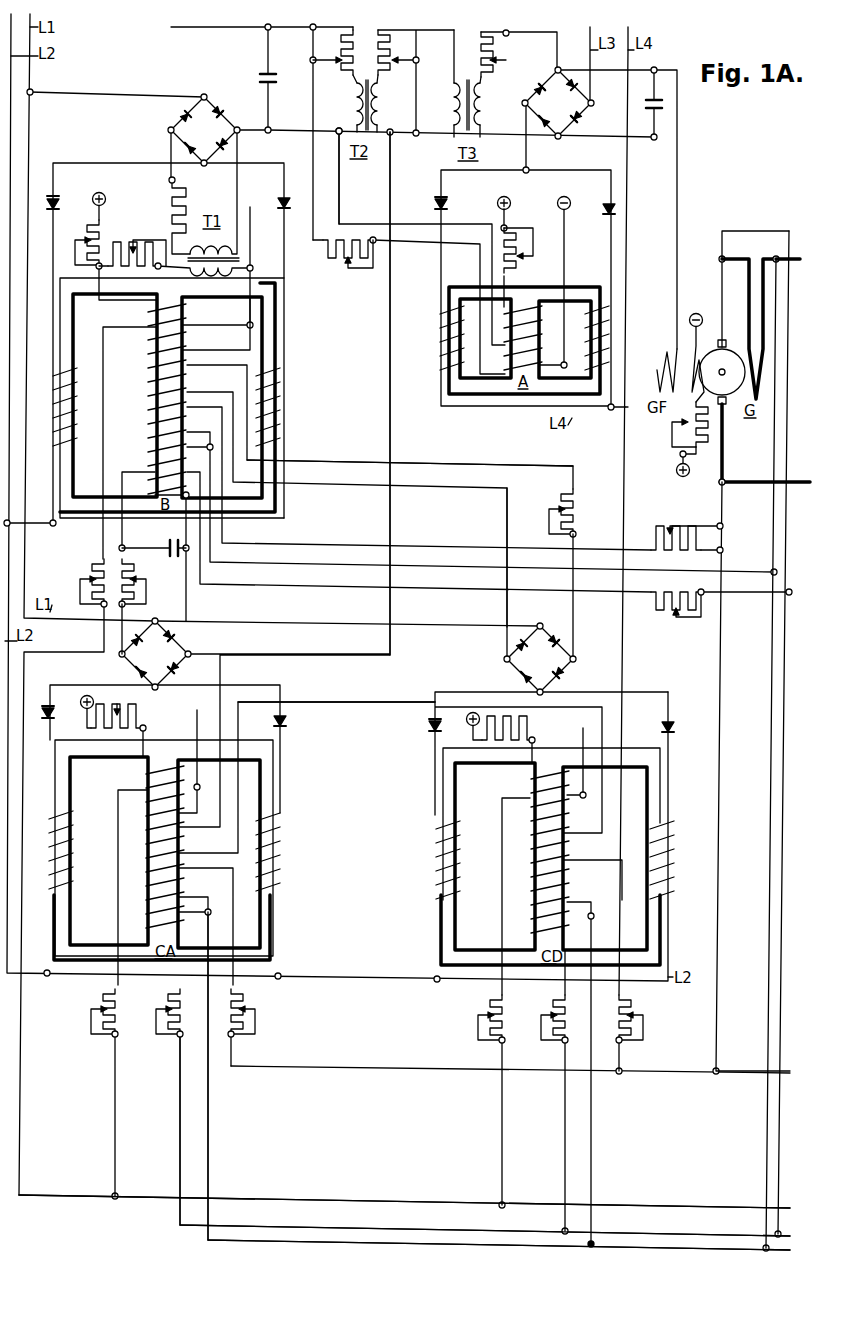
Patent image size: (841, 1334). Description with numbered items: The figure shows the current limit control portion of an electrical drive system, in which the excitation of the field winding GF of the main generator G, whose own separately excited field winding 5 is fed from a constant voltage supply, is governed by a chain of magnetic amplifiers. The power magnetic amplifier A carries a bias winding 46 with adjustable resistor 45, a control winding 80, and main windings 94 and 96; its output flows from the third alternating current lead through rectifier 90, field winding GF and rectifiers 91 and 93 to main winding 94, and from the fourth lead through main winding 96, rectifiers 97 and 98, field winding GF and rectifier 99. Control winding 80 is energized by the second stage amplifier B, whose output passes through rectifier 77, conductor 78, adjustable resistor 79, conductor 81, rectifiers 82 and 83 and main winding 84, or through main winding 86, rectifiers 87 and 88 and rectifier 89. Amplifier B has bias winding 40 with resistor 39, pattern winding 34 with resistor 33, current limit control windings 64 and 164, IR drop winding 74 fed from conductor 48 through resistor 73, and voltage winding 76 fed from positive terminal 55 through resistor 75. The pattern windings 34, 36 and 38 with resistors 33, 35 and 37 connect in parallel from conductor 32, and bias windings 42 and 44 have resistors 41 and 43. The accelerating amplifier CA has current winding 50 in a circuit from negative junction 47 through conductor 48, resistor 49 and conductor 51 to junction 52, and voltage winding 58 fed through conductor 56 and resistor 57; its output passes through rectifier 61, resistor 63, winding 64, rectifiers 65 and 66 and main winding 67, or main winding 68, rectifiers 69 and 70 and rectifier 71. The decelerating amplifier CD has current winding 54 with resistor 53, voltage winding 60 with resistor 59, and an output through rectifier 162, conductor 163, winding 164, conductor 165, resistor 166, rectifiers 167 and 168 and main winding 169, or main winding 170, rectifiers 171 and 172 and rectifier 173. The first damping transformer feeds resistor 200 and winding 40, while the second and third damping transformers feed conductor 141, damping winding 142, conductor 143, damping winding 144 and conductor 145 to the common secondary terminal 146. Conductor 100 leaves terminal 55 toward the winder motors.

The field winding 5 is at (700, 408).
The conductor 32 is at (752, 1208).
The adjustable resistor 33 is at (92, 563).
The pattern winding 34 is at (185, 338).
The adjustable resistor 35 is at (102, 995).
The pattern winding 36 is at (152, 805).
The adjustable resistor 37 is at (490, 1001).
The pattern winding 38 is at (538, 812).
The adjustable resistor 39 is at (87, 232).
The bias winding 40 is at (185, 312).
The adjustable resistor 41 is at (116, 714).
The bias winding 42 is at (146, 781).
The adjustable resistor 43 is at (486, 747).
The bias winding 44 is at (532, 787).
The adjustable resistor 45 is at (520, 268).
The bias winding 46 is at (540, 330).
The negative junction 47 is at (720, 257).
The conductor 48 is at (767, 230).
The adjustable resistor 49 is at (167, 995).
The current winding 50 is at (150, 922).
The conductor 51 is at (272, 546).
The less negative junction 52 is at (780, 255).
The adjustable resistor 53 is at (553, 1001).
The current winding 54 is at (533, 930).
The positive terminal 55 is at (724, 486).
The conductor 56 is at (719, 820).
The adjustable resistor 57 is at (245, 994).
The voltage winding 58 is at (183, 885).
The adjustable resistor 59 is at (632, 1002).
The voltage winding 60 is at (569, 888).
The rectifier 61 is at (155, 654).
The adjustable resistor 63 is at (134, 565).
The current limit control winding 64 is at (152, 490).
The rectifier 65 is at (176, 669).
The rectifier 66 is at (287, 723).
The main winding 67 is at (281, 845).
The main winding 68 is at (74, 868).
The rectifier 69 is at (54, 714).
The rectifier 70 is at (135, 670).
The rectifier 71 is at (176, 633).
The adjustable resistor 73 is at (662, 603).
The IR drop winding 74 is at (148, 451).
The adjustable resistor 75 is at (663, 537).
The voltage winding 76 is at (148, 414).
The rectifier 77 is at (204, 130).
The conductor 78 is at (312, 111).
The adjustable resistor 79 is at (329, 260).
The control winding 80 is at (540, 357).
The conductor 81 is at (340, 204).
The rectifier 82 is at (225, 147).
The rectifier 83 is at (282, 198).
The main winding 84 is at (283, 398).
The main winding 86 is at (55, 412).
The rectifier 87 is at (58, 204).
The rectifier 88 is at (183, 147).
The rectifier 89 is at (224, 109).
The rectifier 90 is at (558, 103).
The rectifier 91 is at (537, 121).
The rectifier 93 is at (605, 219).
The main winding 94 is at (590, 374).
The main winding 96 is at (448, 364).
The rectifier 97 is at (448, 203).
The rectifier 98 is at (542, 82).
The rectifier 99 is at (578, 120).
The conductor 100 is at (764, 482).
The conductor 141 is at (389, 347).
The damping winding 142 is at (184, 843).
The conductor 143 is at (341, 707).
The damping winding 144 is at (569, 849).
The conductor 145 is at (634, 678).
The upper common secondary terminal 146 is at (404, 31).
The rectifier 162 is at (540, 659).
The conductor 163 is at (504, 606).
The current limit control winding 164 is at (148, 372).
The conductor 165 is at (459, 468).
The adjustable resistor 166 is at (580, 516).
The rectifier 167 is at (560, 676).
The rectifier 168 is at (662, 730).
The main winding 169 is at (666, 851).
The main winding 170 is at (436, 868).
The rectifier 171 is at (429, 730).
The rectifier 172 is at (520, 677).
The rectifier 173 is at (562, 626).
The resistor 200 is at (124, 244).